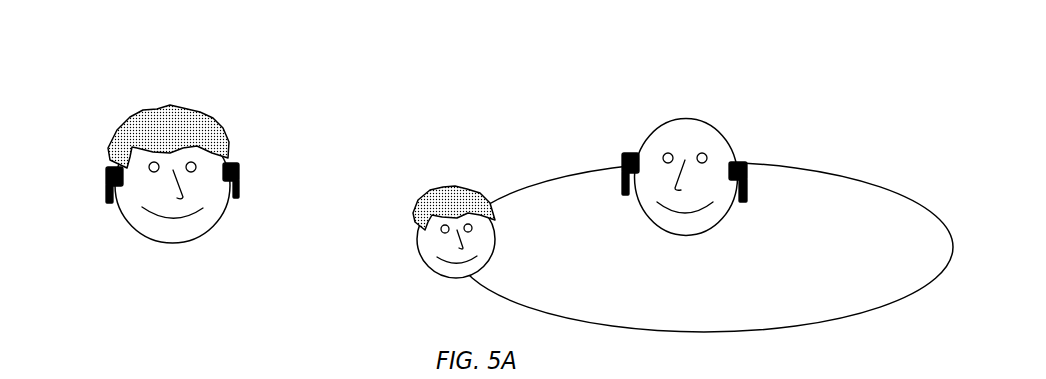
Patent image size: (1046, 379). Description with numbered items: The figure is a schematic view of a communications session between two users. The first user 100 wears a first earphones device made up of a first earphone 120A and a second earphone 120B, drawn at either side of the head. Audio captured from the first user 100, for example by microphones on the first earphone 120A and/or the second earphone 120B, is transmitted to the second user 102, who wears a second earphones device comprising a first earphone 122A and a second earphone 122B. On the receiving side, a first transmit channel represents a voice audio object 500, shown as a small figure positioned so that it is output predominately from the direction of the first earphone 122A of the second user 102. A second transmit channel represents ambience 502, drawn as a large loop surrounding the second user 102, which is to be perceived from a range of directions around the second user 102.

The first user 100 is at (161, 104).
The first earphone 120A is at (106, 185).
The second earphone 120B is at (240, 178).
The second user 102 is at (689, 118).
The first earphone 122A is at (622, 180).
The second earphone 122B is at (747, 180).
The voice audio object 500 is at (439, 192).
The ambience 502 is at (528, 181).